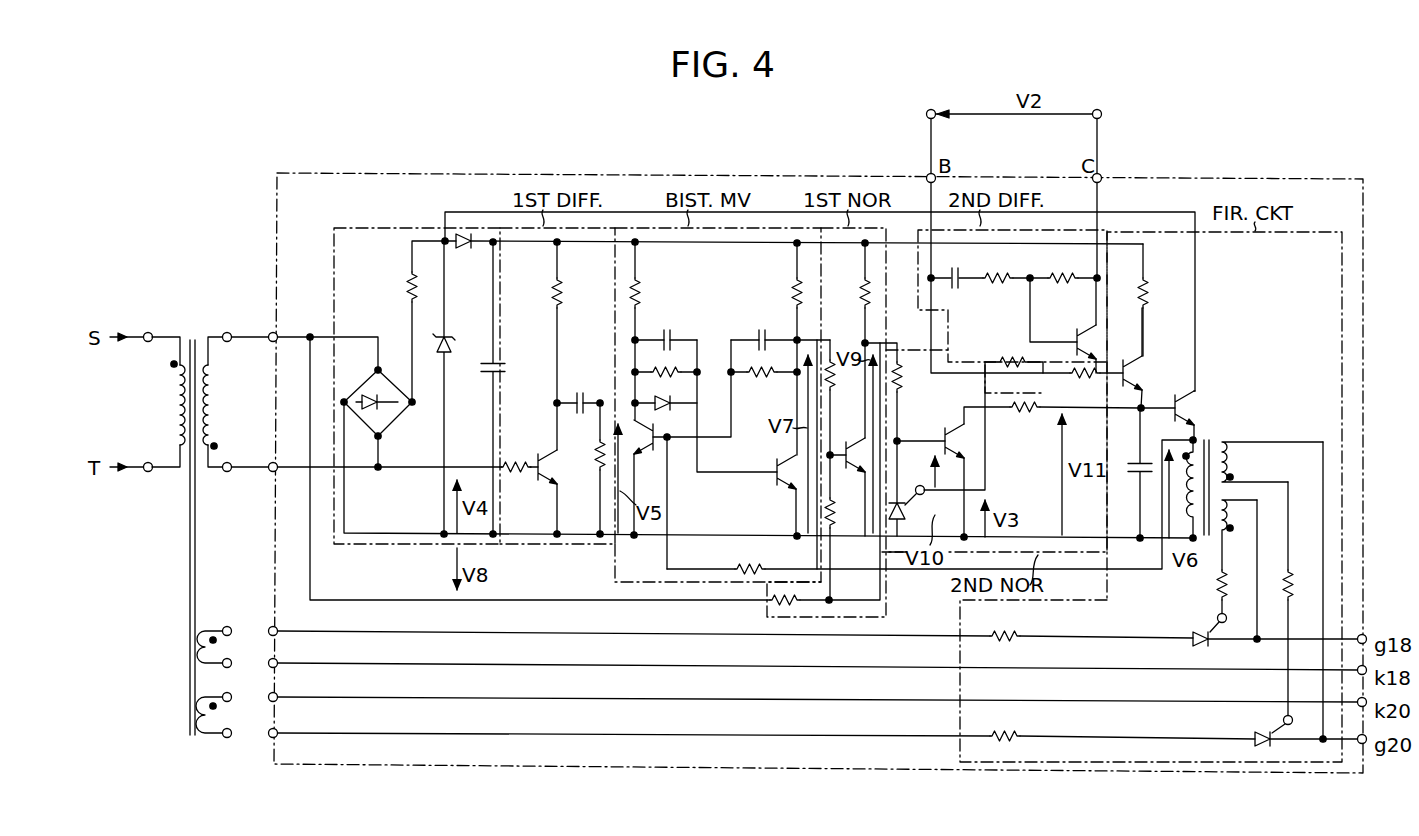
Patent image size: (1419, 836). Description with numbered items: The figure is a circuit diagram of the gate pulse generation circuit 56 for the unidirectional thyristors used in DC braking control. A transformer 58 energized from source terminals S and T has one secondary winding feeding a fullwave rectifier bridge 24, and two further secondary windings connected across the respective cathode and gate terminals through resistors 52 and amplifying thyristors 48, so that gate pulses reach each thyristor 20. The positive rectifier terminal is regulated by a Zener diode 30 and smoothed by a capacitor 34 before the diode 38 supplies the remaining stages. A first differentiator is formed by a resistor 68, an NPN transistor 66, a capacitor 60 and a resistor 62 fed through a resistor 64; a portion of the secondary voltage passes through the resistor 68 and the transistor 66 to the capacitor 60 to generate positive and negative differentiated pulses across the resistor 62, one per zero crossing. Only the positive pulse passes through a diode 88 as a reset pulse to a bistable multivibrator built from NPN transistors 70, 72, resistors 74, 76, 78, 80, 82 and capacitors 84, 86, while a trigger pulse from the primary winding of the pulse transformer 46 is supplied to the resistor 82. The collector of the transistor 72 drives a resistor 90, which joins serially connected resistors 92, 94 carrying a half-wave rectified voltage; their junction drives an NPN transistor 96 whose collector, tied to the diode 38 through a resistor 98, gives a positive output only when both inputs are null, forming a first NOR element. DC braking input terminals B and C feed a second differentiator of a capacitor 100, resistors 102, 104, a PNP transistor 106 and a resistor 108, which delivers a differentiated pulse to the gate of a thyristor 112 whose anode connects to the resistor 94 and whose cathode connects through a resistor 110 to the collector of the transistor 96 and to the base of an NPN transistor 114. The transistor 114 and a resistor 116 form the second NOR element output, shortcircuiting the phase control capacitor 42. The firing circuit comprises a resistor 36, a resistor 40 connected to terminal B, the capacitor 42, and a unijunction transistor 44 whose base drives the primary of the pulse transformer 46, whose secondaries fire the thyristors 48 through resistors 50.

The pulse generation circuit 56 is at (667, 167).
The transformer 58 is at (194, 337).
The unidirectional thyristor 20 is at (402, 289).
The fullwave rectifier bridge 24 is at (390, 373).
The diode 38 is at (471, 248).
The Zener diode 30 is at (448, 344).
The capacitor 34 is at (485, 375).
The resistor 64 is at (562, 292).
The capacitor 60 is at (582, 394).
The resistor 62 is at (599, 470).
The resistor 68 is at (517, 464).
The NPN common emitter transistor 66 is at (543, 467).
The resistor 74 is at (639, 292).
The capacitor 84 is at (671, 332).
The resistor 76 is at (661, 370).
The semiconductor diode 88 is at (662, 403).
The NPN common emitter transistor 70 is at (655, 446).
The capacitor 86 is at (760, 332).
The resistor 78 is at (764, 379).
The resistor 80 is at (791, 287).
The NPN common emitter transistor 72 is at (777, 458).
The resistor 82 is at (748, 569).
The resistor 94 is at (769, 602).
The resistor 98 is at (864, 287).
The resistor 90 is at (834, 381).
The NPN common emitter transistor 96 is at (845, 444).
The resistor 92 is at (838, 505).
The resistor 110 is at (918, 401).
The NPN common emitter transistor 114 is at (946, 428).
The thyristor 112 is at (898, 494).
The resistor 116 is at (1028, 411).
The resistor 40 is at (1106, 365).
The capacitor 100 is at (957, 283).
The resistor 102 is at (1004, 284).
The resistor 104 is at (1062, 282).
The PNP transistor 106 is at (1080, 338).
The resistor 108 is at (1014, 360).
The resistor 36 is at (1144, 296).
The unijunction transistor 44 is at (1168, 411).
The phase control capacitor 42 is at (1136, 459).
The pulse transformer 46 is at (1206, 442).
The resistor 50 is at (1220, 578).
The resistor 52 is at (1020, 641).
The amplifying thyristor 48 is at (1192, 630).